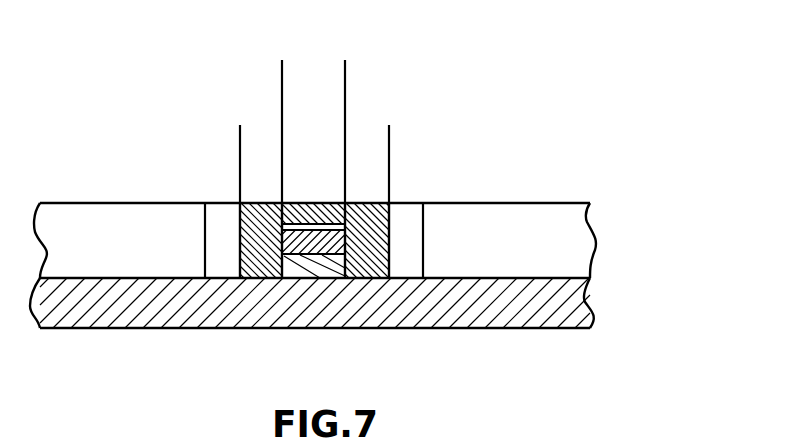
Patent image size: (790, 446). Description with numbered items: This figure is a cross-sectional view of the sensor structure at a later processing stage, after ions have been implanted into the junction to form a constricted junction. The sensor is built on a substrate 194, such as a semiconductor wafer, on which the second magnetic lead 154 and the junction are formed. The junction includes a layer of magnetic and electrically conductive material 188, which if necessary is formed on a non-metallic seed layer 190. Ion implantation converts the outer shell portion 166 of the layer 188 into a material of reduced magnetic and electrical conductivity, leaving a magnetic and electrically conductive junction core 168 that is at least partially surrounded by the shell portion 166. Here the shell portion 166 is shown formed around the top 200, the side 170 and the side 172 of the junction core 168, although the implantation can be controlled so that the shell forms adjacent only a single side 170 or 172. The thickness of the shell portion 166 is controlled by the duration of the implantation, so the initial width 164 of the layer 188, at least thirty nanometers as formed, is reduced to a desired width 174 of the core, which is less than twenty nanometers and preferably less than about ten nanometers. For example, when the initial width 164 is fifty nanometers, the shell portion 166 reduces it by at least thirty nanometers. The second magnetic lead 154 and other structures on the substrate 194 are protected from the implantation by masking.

The second magnetic lead 154 is at (568, 242).
The substrate 194 is at (568, 300).
The side of junction core 172 is at (382, 260).
The side of junction core 170 is at (245, 218).
The shell portion 166 is at (387, 225).
The top of junction core 200 is at (315, 202).
The magnetic and electrically conductive layer 188 is at (291, 231).
The junction core 168 is at (307, 245).
The non-metallic seed layer 190 is at (317, 268).
The width 174 is at (368, 65).
The width 164 is at (412, 132).